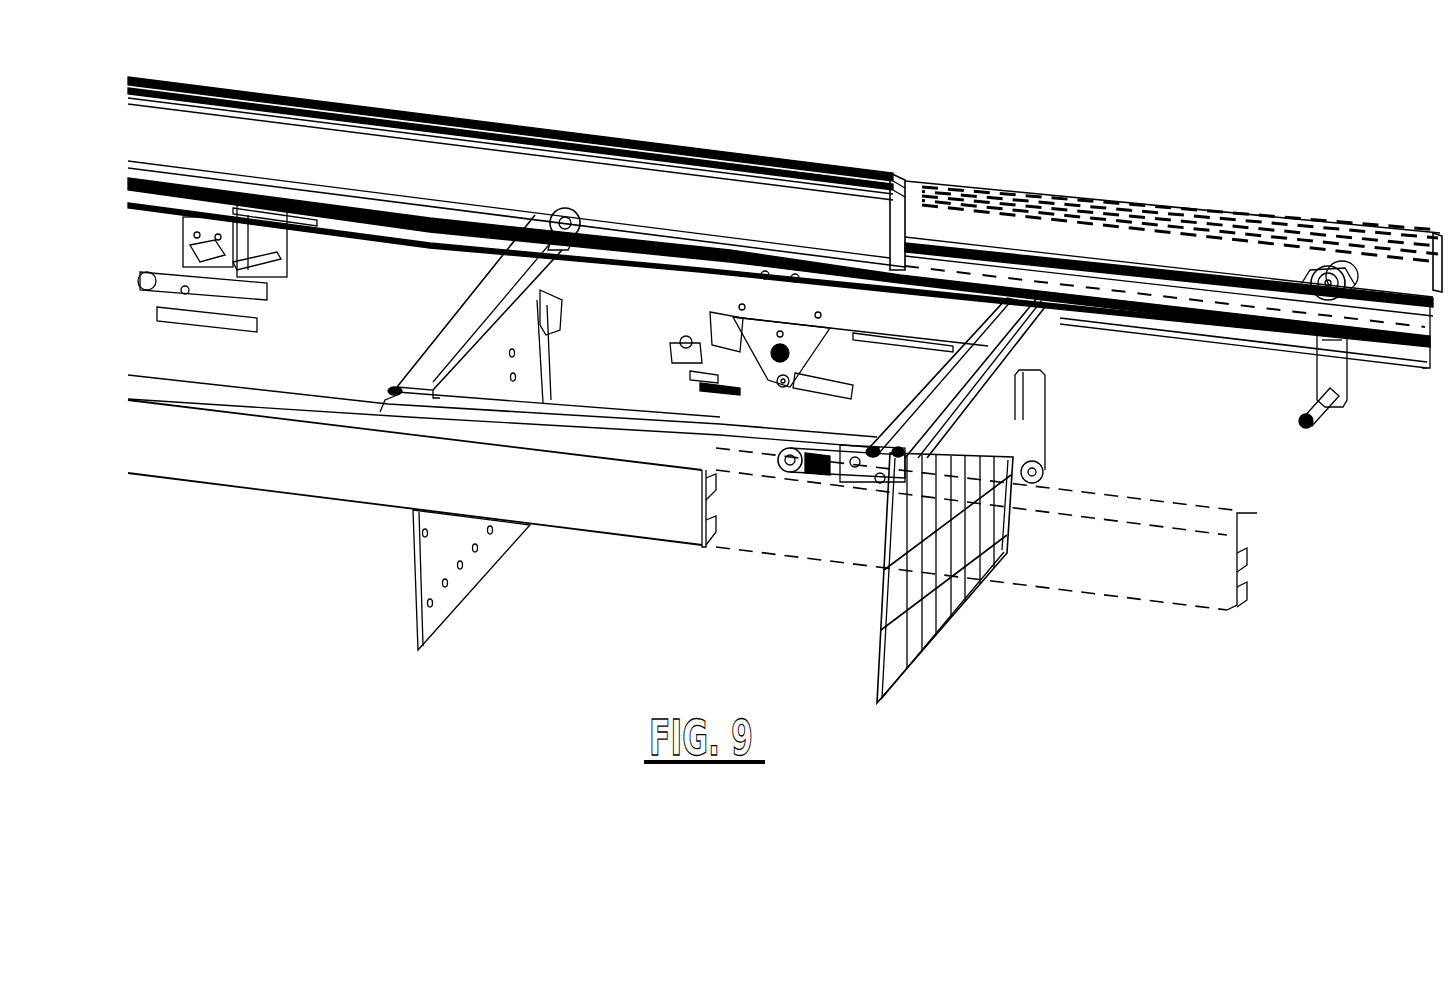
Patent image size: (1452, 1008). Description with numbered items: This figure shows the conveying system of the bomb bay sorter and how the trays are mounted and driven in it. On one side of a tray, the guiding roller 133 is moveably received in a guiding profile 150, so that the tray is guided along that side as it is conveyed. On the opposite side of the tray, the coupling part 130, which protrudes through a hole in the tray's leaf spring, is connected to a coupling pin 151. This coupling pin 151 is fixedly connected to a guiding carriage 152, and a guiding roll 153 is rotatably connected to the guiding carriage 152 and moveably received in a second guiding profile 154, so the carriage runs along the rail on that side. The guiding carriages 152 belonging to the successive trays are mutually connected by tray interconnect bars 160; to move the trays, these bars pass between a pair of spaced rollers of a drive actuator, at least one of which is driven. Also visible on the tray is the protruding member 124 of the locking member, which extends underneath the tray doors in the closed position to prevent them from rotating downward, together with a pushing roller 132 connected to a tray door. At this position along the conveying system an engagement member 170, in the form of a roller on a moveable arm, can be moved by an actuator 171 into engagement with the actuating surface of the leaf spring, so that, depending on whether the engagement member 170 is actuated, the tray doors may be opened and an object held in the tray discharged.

The protruding member 124 is at (697, 377).
The coupling part 130 is at (783, 388).
The pushing roller 132 is at (1045, 470).
The guiding roller 133 is at (793, 470).
The guiding profile 150 is at (662, 500).
The coupling pin 151 is at (1320, 413).
The guiding carriage 152 is at (1320, 367).
The guiding roll 153 is at (1320, 262).
The guiding profile 154 is at (905, 186).
The tray interconnect bar 160 is at (1103, 322).
The engagement member 170 is at (680, 350).
The actuator 171 is at (727, 325).